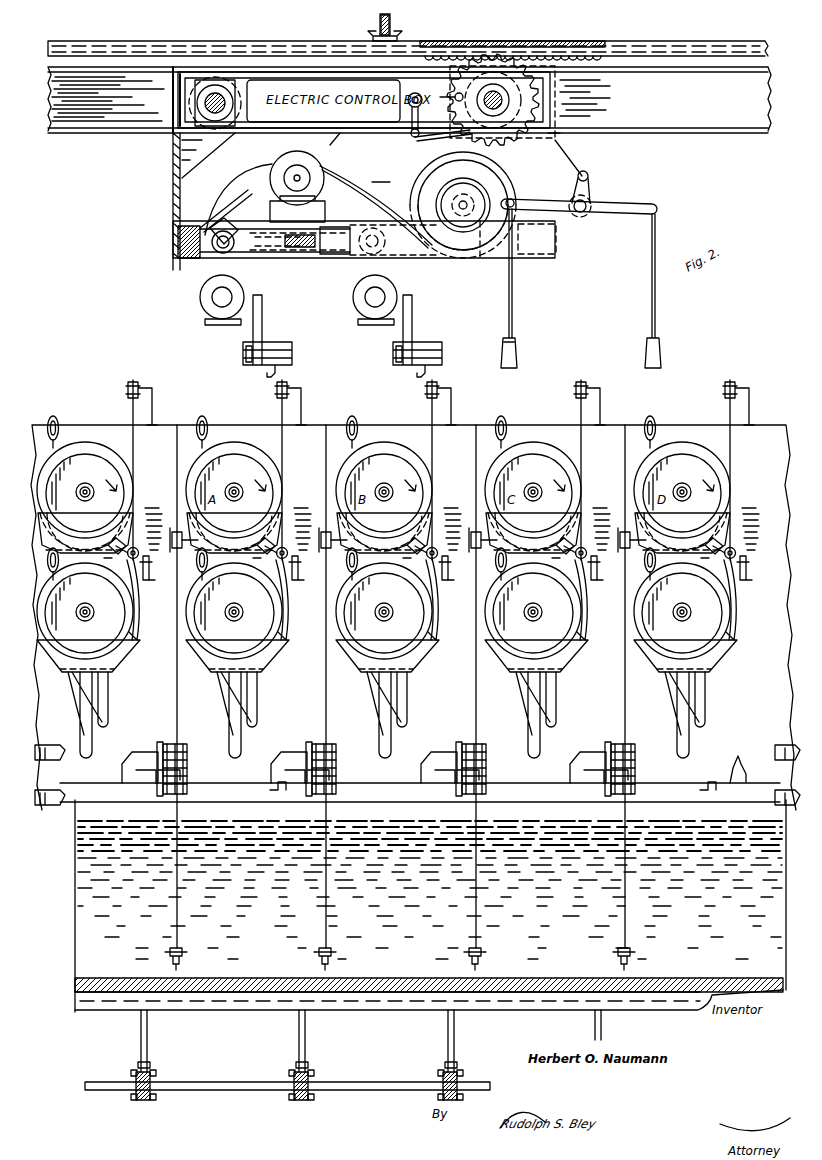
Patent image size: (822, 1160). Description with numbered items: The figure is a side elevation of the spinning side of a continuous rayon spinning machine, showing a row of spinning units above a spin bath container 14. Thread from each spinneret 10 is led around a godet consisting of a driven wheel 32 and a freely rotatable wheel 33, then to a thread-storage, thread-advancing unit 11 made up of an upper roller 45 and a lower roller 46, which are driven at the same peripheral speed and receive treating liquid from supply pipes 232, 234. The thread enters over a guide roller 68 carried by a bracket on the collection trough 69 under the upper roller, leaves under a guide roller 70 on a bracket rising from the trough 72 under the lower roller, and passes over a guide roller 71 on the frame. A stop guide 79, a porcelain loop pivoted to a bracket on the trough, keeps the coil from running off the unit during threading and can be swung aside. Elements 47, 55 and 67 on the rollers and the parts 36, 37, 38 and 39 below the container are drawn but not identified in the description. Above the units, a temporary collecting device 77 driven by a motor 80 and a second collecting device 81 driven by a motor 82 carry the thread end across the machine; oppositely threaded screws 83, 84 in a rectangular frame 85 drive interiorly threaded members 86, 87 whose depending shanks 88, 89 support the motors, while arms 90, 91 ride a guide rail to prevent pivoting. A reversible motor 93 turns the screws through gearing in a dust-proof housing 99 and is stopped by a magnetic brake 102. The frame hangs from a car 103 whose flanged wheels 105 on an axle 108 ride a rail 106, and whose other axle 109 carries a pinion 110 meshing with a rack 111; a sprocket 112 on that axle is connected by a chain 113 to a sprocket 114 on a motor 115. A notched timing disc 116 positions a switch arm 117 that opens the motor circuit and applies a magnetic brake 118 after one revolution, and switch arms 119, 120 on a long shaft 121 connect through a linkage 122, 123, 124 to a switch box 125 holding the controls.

The spinneret 10 is at (180, 954).
The thread-storage, thread-advancing unit 11 is at (117, 452).
The spin bath container 14 is at (256, 994).
The driven wheel 32 is at (187, 756).
The freely rotatable wheel 33 is at (196, 790).
The rod 36 is at (148, 1046).
The nut 37 is at (134, 1076).
The worm gear 38 is at (148, 1100).
The shaft 39 is at (287, 1098).
The upper roller 45 is at (130, 482).
The roller 46 is at (586, 620).
The lower wheel shaft 47 is at (88, 610).
The upper wheel shaft 55 is at (85, 483).
The lower wheel 67 is at (110, 570).
The guide roller 68 is at (175, 530).
The collection trough 69 is at (132, 516).
The guide roller 70 is at (150, 566).
The guide roller 71 is at (126, 390).
The collection trough 72 is at (127, 665).
The temporary collecting device 77 is at (288, 348).
The stop guide 79 is at (146, 547).
The motor 80 is at (214, 318).
The temporary collecting device 81 is at (445, 342).
The motor 82 is at (366, 320).
The threaded screw 83 is at (218, 216).
The threaded screw 84 is at (370, 221).
The rectangular frame 85 is at (175, 242).
The interiorly threaded member 86 is at (240, 170).
The interiorly threaded member 87 is at (392, 268).
The depending shank 88 is at (216, 262).
The depending shank 89 is at (355, 258).
The arm 90 is at (285, 252).
The arm 91 is at (305, 250).
The reversible motor 93 is at (285, 158).
The dust-proof housing 99 is at (381, 176).
The magnetic brake 102 is at (322, 168).
The car 103 is at (170, 93).
The flanged wheels 105 is at (235, 140).
The rail 106 is at (704, 128).
The axle 108 is at (222, 96).
The axle 109 is at (520, 55).
The pinion 110 is at (570, 44).
The rack 111 is at (590, 42).
The sprocket 112 is at (496, 92).
The chain 113 is at (555, 142).
The sprocket 114 is at (432, 190).
The motor 115 is at (440, 184).
The timing disc 116 is at (480, 42).
The switch arm 117 is at (456, 96).
The magnetic brake 118 is at (478, 255).
The switch arm 119 is at (628, 214).
The switch arm 120 is at (520, 200).
The long shaft 121 is at (583, 216).
The linkage 122 is at (589, 176).
The linkage 123 is at (435, 140).
The linkage 124 is at (412, 118).
The switch box 125 is at (342, 148).
The supply pipe 232 is at (58, 420).
The supply pipe 234 is at (200, 566).